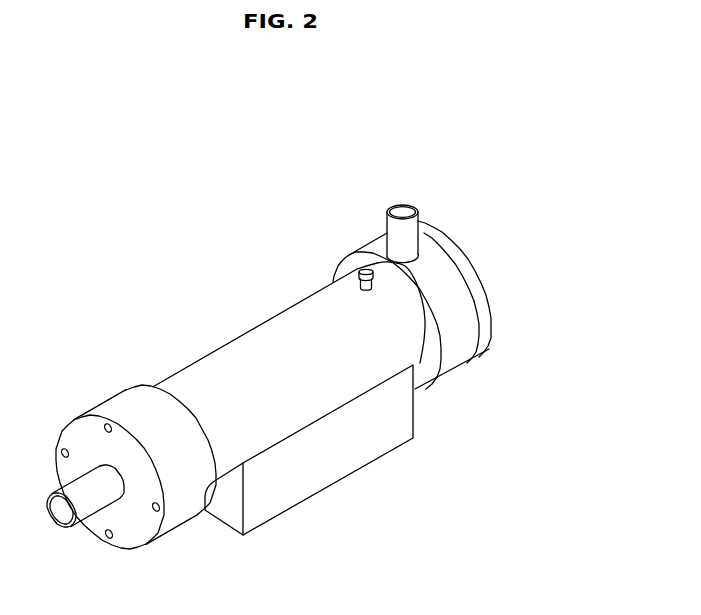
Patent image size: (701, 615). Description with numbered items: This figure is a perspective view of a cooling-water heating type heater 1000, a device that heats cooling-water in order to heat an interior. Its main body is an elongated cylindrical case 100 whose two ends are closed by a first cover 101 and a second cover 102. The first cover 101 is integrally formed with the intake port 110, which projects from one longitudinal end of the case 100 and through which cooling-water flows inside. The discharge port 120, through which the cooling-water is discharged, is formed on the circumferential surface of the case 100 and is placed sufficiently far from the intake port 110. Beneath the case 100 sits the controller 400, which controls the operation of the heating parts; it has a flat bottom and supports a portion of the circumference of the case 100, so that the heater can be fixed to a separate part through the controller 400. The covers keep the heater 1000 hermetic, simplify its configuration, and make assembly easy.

The cooling-water heating type heater 1000 is at (437, 148).
The case 100 is at (261, 294).
The first cover 101 is at (131, 549).
The second cover 102 is at (436, 238).
The intake port 110 is at (81, 513).
The discharge port 120 is at (397, 202).
The controller 400 is at (358, 482).